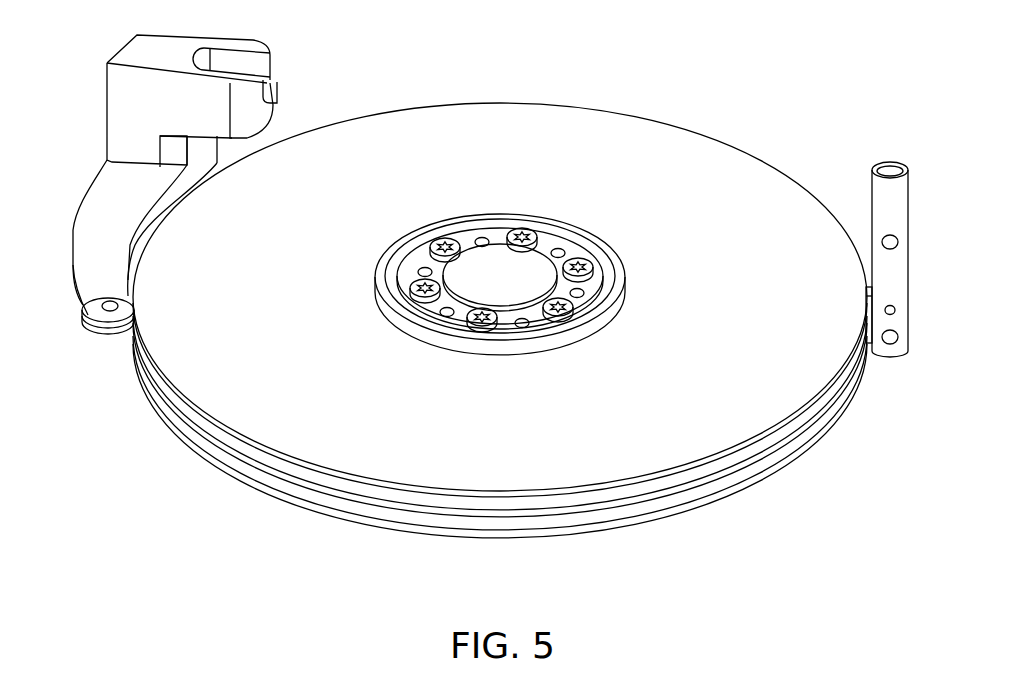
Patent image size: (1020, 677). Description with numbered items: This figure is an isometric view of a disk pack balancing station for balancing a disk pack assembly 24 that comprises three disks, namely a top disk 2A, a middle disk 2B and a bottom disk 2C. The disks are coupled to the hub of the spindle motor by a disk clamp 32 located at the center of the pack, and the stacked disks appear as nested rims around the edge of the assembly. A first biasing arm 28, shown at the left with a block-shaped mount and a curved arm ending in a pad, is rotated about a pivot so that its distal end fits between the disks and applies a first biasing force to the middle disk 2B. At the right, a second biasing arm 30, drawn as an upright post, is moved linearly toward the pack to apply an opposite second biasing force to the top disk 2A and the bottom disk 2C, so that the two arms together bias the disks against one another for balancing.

The disk pack assembly 24 is at (652, 105).
The top disk 2A is at (805, 410).
The middle disk 2B is at (795, 440).
The bottom disk 2C is at (782, 467).
The disk clamp 32 is at (626, 268).
The second biasing arm 30 is at (886, 153).
The first biasing arm 28 is at (80, 184).